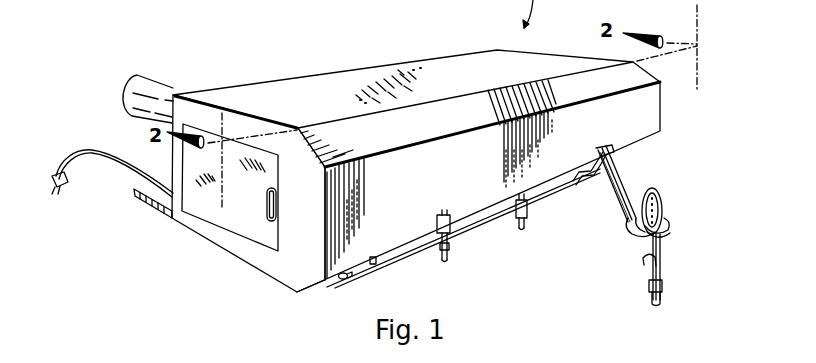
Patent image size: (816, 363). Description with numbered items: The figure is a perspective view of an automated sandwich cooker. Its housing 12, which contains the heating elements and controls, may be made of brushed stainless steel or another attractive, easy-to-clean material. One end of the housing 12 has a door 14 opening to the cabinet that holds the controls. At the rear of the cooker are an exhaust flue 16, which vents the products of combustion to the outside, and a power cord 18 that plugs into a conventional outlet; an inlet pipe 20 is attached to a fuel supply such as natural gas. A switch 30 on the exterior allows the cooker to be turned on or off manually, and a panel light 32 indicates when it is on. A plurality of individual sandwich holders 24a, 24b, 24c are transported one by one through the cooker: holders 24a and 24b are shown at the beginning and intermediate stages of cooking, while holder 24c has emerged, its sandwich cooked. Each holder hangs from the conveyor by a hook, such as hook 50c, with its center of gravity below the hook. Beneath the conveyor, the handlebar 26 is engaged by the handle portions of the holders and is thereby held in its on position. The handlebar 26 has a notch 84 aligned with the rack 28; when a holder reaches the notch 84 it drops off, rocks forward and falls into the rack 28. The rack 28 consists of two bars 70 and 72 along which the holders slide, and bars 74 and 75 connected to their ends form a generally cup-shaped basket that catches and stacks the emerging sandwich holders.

The housing 12 is at (277, 262).
The door 14 is at (230, 217).
The exhaust flue 16 is at (157, 90).
The power cord 18 is at (72, 158).
The inlet pipe 20 is at (143, 204).
The sandwich holder 24a is at (434, 263).
The sandwich holder 24b is at (519, 235).
The sandwich holder 24c is at (667, 272).
The handlebar 26 is at (465, 233).
The rack 28 is at (620, 161).
The switch 30 is at (373, 264).
The panel light 32 is at (343, 279).
The hook 50c is at (647, 262).
The bar 70 is at (626, 186).
The bar 72 is at (618, 189).
The bar 74 is at (636, 225).
The bar 75 is at (667, 222).
The notch 84 is at (582, 185).